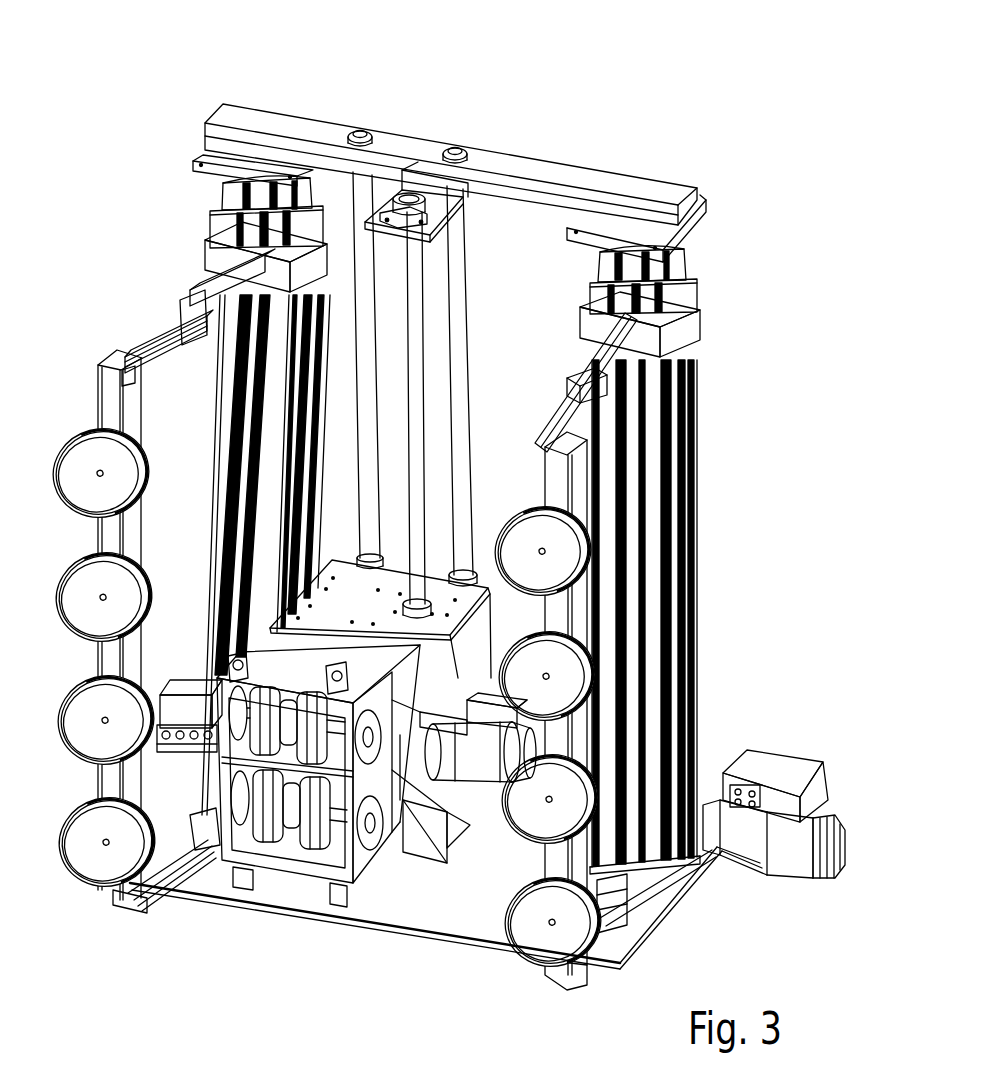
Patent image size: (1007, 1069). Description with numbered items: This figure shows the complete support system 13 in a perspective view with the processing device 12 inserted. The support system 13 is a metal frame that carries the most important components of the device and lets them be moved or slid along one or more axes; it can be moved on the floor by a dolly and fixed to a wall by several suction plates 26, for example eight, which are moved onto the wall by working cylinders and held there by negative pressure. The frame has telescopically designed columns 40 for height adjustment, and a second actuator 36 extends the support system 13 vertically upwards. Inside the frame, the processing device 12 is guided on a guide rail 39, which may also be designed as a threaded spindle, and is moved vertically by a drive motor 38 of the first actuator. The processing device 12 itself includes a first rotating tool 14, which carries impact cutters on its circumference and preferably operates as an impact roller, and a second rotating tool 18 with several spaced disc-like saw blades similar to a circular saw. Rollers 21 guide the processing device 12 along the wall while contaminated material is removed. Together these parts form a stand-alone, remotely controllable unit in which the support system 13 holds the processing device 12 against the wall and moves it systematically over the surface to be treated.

The support system 13 is at (530, 138).
The guide rail 39 is at (416, 338).
The telescopically designed columns 40 is at (233, 403).
The rollers 21 is at (337, 643).
The second actuator 36 is at (182, 650).
The suction plates 26 is at (97, 855).
The drive motor 38 is at (485, 772).
The second rotating tool 18 is at (353, 713).
The rotating tool 14 is at (330, 830).
The processing device 12 is at (292, 895).